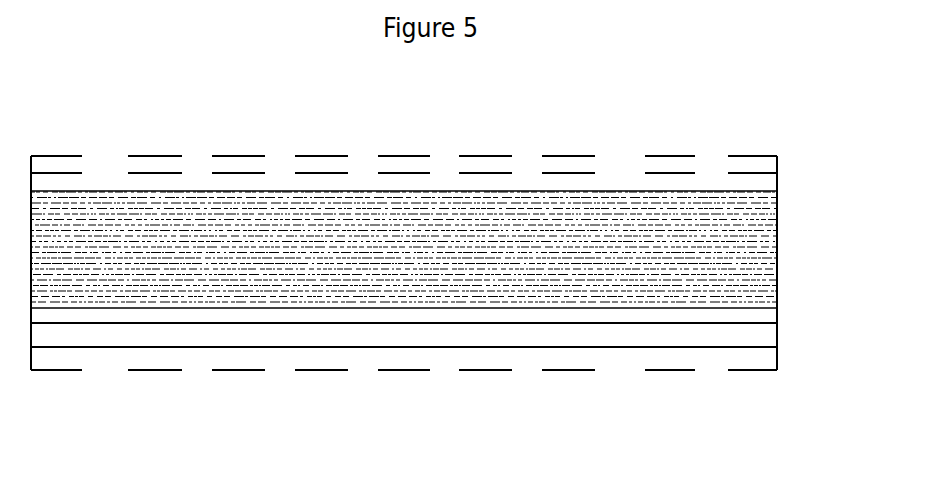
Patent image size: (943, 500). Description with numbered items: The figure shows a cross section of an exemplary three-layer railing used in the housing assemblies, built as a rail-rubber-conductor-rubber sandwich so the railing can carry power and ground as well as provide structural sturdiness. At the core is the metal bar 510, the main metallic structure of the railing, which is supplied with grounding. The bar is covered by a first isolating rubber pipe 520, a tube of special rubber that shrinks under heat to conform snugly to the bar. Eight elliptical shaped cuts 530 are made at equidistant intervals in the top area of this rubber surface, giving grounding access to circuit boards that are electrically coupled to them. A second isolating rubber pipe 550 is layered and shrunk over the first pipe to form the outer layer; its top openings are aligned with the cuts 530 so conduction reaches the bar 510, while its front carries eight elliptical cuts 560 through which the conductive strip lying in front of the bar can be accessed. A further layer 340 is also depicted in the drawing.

The metal bar 510 is at (760, 238).
The first isolating rubber pipe 520 is at (760, 184).
The elliptical shaped cuts 530 is at (528, 173).
The substrate layer 340 is at (726, 337).
The second isolating rubber pipe 550 is at (744, 163).
The elliptical cuts 560 is at (195, 378).